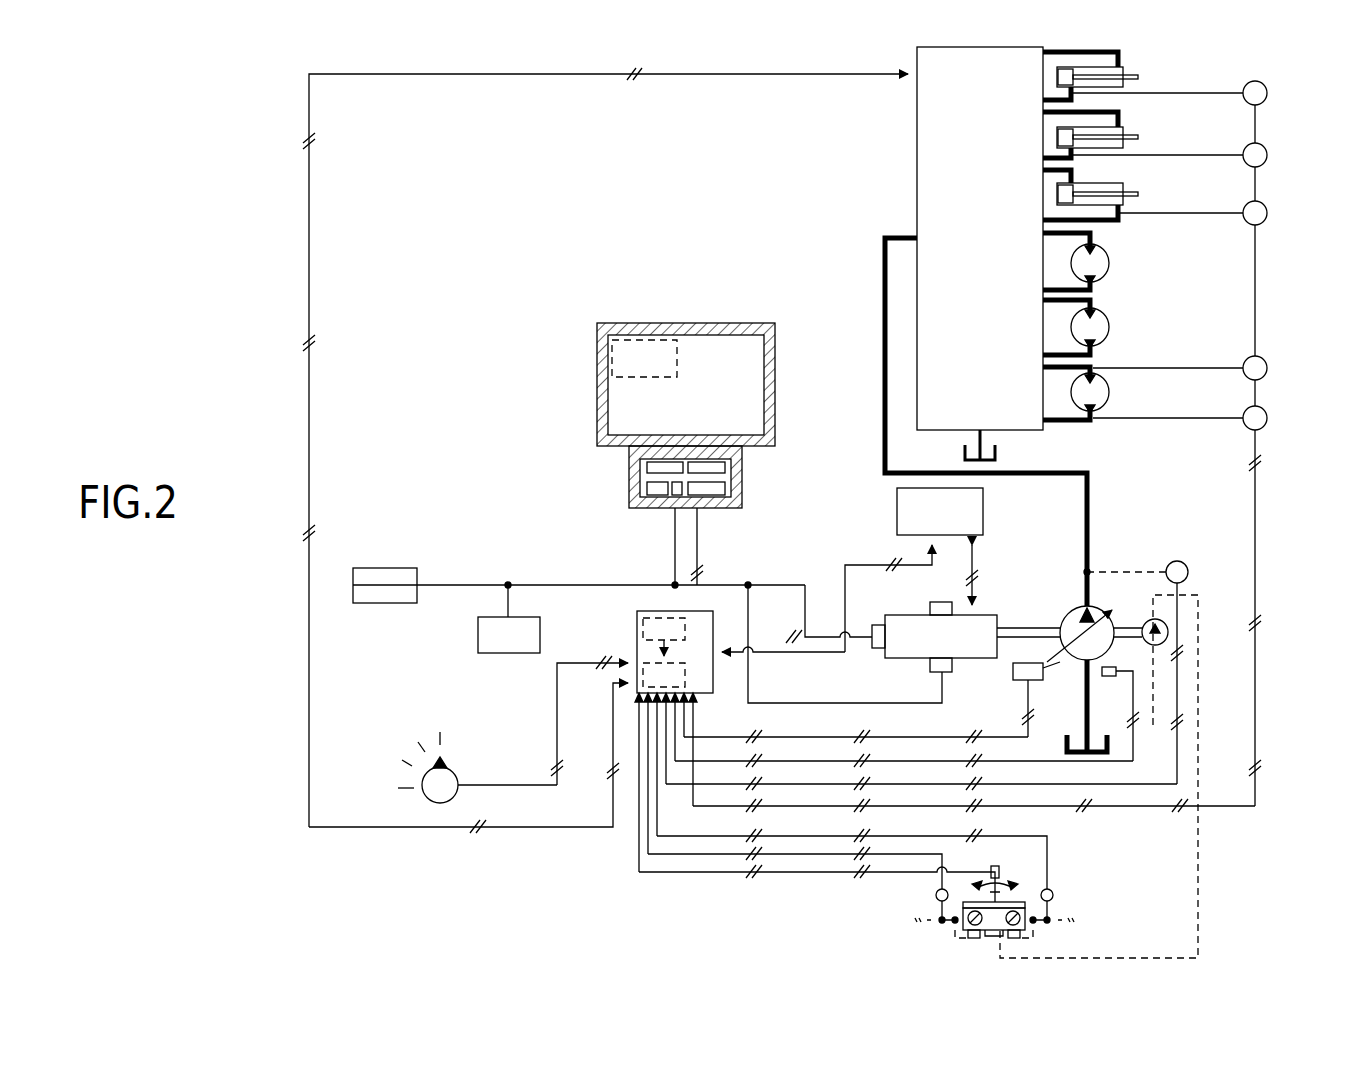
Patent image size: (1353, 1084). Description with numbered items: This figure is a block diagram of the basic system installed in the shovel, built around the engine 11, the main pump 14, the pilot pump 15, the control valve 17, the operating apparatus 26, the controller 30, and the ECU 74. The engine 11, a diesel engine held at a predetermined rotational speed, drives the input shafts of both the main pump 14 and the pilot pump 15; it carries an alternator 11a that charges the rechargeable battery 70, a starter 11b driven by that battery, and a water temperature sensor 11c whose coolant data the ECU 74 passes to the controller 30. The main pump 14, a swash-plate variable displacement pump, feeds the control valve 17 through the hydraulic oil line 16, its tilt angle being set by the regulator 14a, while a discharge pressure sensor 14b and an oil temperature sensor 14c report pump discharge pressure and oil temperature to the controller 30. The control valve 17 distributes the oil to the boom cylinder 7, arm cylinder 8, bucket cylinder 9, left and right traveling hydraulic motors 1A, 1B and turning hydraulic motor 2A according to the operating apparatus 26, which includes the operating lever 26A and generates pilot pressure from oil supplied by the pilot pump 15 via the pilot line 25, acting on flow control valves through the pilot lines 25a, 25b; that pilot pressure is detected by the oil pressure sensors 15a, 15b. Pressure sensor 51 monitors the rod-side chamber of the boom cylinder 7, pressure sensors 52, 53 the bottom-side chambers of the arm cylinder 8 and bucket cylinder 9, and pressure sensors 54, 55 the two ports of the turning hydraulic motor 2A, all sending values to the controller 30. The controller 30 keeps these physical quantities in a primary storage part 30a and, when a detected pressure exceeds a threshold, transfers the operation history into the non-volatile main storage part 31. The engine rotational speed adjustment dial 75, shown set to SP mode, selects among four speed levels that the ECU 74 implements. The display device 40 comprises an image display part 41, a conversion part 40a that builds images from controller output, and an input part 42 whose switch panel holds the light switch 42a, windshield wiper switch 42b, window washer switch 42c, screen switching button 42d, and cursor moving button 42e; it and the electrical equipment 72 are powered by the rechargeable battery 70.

The control valve 17 is at (917, 125).
The bucket cylinder 9 is at (1128, 77).
The arm cylinder 8 is at (1128, 137).
The boom cylinder 7 is at (1128, 194).
The pressure sensor 53 is at (1267, 93).
The pressure sensor 52 is at (1267, 155).
The pressure sensor 51 is at (1267, 213).
The pressure sensor 55 is at (1267, 368).
The pressure sensor 54 is at (1267, 418).
The traveling hydraulic motor 1A is at (1109, 260).
The traveling hydraulic motor 1B is at (1109, 324).
The turning hydraulic motor 2A is at (1109, 392).
The hydraulic oil line 16 is at (1087, 501).
The engine control unit (ECU) 74 is at (897, 515).
The engine 11 is at (988, 612).
The alternator 11a is at (952, 676).
The starter 11b is at (872, 652).
The water temperature sensor 11c is at (940, 602).
The main pump 14 is at (1073, 612).
The regulator 14a is at (1043, 682).
The discharge pressure sensor 14b is at (1184, 563).
The oil temperature sensor 14c is at (1108, 677).
The pilot pump 15 is at (1155, 646).
The pilot line 25 is at (1198, 735).
The pilot line 25a is at (1063, 925).
The pilot line 25b is at (925, 925).
The operating apparatus 26 is at (1072, 880).
The operating lever 26A is at (1182, 862).
The oil pressure sensor 15a is at (1053, 895).
The oil pressure sensor 15b is at (936, 895).
The controller 30 is at (637, 648).
The primary storage part 30a is at (637, 622).
The main storage part 31 is at (690, 678).
The display device 40 is at (685, 396).
The conversion part 40a is at (640, 335).
The image display part 41 is at (705, 365).
The input part 42 is at (742, 460).
The light switch 42a is at (725, 470).
The windshield wiper switch 42b is at (725, 492).
The window washer switch 42c is at (647, 466).
The screen switching button 42d is at (647, 490).
The cursor moving button 42e is at (677, 496).
The rechargeable battery 70 is at (510, 653).
The electrical equipment 72 is at (387, 603).
The engine rotational speed adjustment dial 75 is at (452, 770).